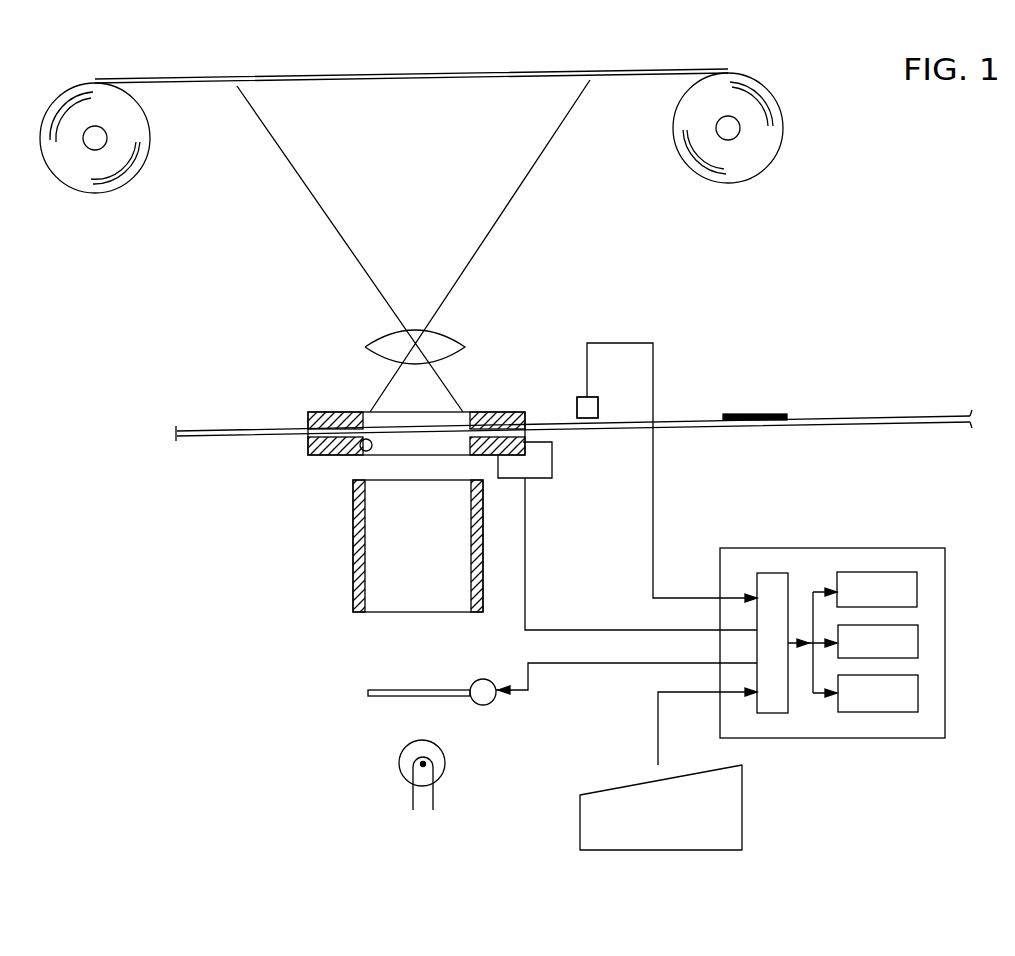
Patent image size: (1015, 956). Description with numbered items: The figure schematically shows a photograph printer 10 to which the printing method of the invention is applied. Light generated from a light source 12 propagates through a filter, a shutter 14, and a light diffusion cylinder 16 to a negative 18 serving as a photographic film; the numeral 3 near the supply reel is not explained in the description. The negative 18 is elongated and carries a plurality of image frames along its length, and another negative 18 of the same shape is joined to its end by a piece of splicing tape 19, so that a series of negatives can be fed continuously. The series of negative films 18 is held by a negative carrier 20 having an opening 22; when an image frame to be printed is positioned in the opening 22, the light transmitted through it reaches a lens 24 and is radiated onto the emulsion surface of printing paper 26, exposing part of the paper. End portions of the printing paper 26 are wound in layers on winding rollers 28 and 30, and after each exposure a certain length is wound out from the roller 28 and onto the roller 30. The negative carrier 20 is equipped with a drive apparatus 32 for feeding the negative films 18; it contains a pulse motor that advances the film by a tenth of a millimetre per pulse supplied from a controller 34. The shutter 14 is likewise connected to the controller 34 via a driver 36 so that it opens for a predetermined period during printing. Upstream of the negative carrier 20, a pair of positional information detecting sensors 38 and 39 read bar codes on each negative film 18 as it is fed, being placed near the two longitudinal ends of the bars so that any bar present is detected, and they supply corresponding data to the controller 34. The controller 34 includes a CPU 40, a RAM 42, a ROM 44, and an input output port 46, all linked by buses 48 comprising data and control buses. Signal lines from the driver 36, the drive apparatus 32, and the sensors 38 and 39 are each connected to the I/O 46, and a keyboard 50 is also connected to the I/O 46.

The photograph printer 10 is at (852, 225).
The film 3 is at (181, 190).
The printing paper 26 is at (200, 80).
The winding roller 30 is at (94, 150).
The winding roller 28 is at (731, 140).
The lens 24 is at (455, 336).
The negative carrier 20 is at (496, 411).
The opening 22 is at (364, 453).
The negative 18 is at (218, 428).
The splicing tape 19 is at (775, 412).
The positional information detecting sensor 38 is at (582, 395).
The positional information detecting sensor 39 is at (587, 407).
The drive apparatus 32 is at (553, 455).
The light diffusion cylinder 16 is at (353, 558).
The shutter 14 is at (390, 688).
The driver 36 is at (492, 700).
The light source 12 is at (400, 760).
The keyboard 50 is at (580, 825).
The controller 34 is at (890, 548).
The input output port (I/O) 46 is at (775, 572).
The buses 48 is at (817, 673).
The RAM 42 is at (917, 588).
The CPU 40 is at (918, 642).
The ROM 44 is at (918, 693).